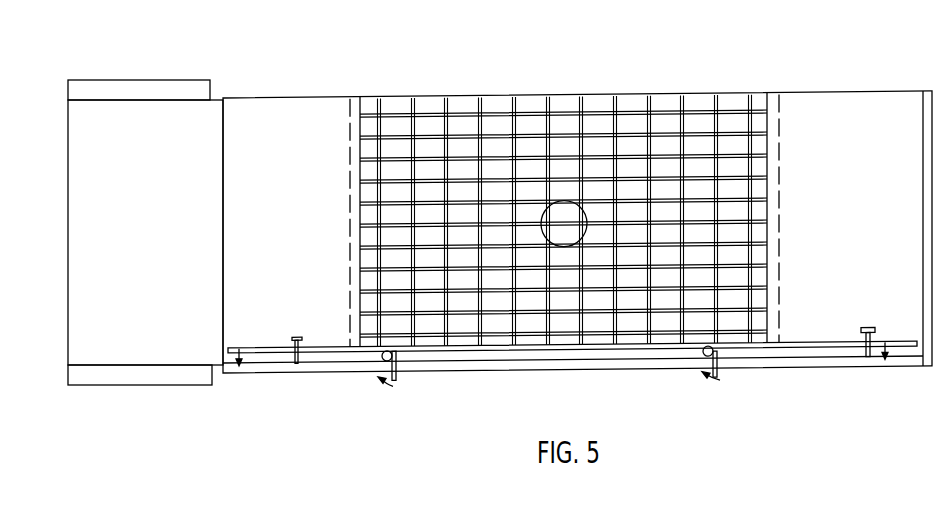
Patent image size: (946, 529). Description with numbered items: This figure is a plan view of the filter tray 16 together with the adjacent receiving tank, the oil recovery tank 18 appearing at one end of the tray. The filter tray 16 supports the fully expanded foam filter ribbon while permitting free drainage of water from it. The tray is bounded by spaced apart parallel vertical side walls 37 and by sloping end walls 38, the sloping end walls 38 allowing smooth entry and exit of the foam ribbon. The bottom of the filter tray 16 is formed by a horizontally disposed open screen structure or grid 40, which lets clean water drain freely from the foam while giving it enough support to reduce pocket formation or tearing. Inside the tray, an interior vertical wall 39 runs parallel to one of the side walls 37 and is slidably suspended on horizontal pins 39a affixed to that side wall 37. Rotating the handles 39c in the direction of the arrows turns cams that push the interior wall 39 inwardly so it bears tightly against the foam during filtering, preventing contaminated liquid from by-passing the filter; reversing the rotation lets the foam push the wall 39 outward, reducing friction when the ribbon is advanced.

The filter tray 16 is at (457, 92).
The oil recovery tank 18 is at (138, 358).
The side walls 37 is at (618, 102).
The end walls 38 is at (283, 113).
The interior vertical wall 39 is at (278, 348).
The horizontal pins 39a is at (303, 343).
The handles 39c is at (395, 379).
The open screen structure or grid 40 is at (545, 330).